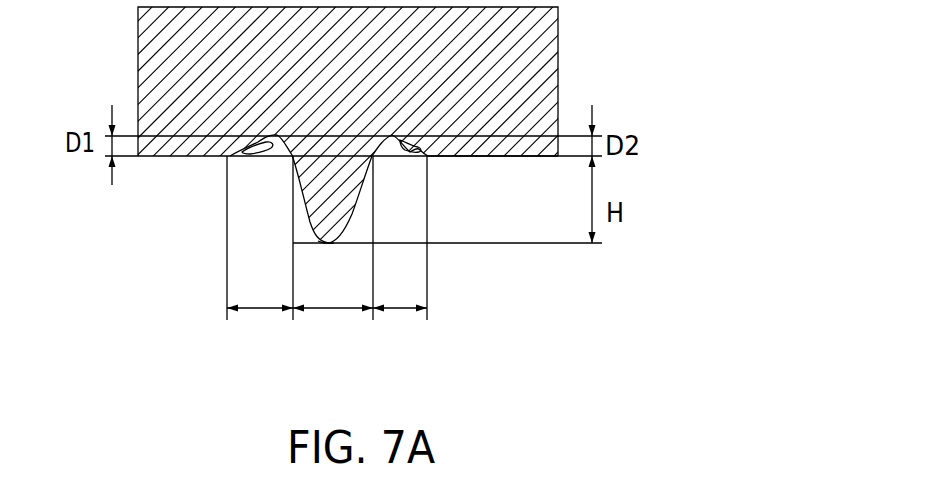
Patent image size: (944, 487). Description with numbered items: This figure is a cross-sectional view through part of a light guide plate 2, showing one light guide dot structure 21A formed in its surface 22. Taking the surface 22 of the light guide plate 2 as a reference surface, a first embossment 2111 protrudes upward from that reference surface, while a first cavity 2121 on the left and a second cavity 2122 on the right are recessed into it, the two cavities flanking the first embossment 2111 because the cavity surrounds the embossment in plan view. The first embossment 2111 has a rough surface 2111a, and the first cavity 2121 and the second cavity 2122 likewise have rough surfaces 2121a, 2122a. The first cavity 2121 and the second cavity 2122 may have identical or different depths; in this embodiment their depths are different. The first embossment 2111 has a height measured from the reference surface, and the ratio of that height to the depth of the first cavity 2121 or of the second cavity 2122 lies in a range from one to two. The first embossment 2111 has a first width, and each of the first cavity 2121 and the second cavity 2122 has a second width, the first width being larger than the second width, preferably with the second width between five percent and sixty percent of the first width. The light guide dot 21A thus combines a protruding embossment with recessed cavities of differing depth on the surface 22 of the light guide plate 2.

The light guide plate 2 is at (558, 75).
The surface 22 is at (553, 157).
The groove structure 21A is at (427, 343).
The first embossment 2111 is at (320, 213).
The rough surface 2111a is at (333, 243).
The first cavity 2121 is at (278, 150).
The rough surface 2121a is at (233, 158).
The second cavity 2122 is at (393, 158).
The rough surface 2122a is at (432, 153).